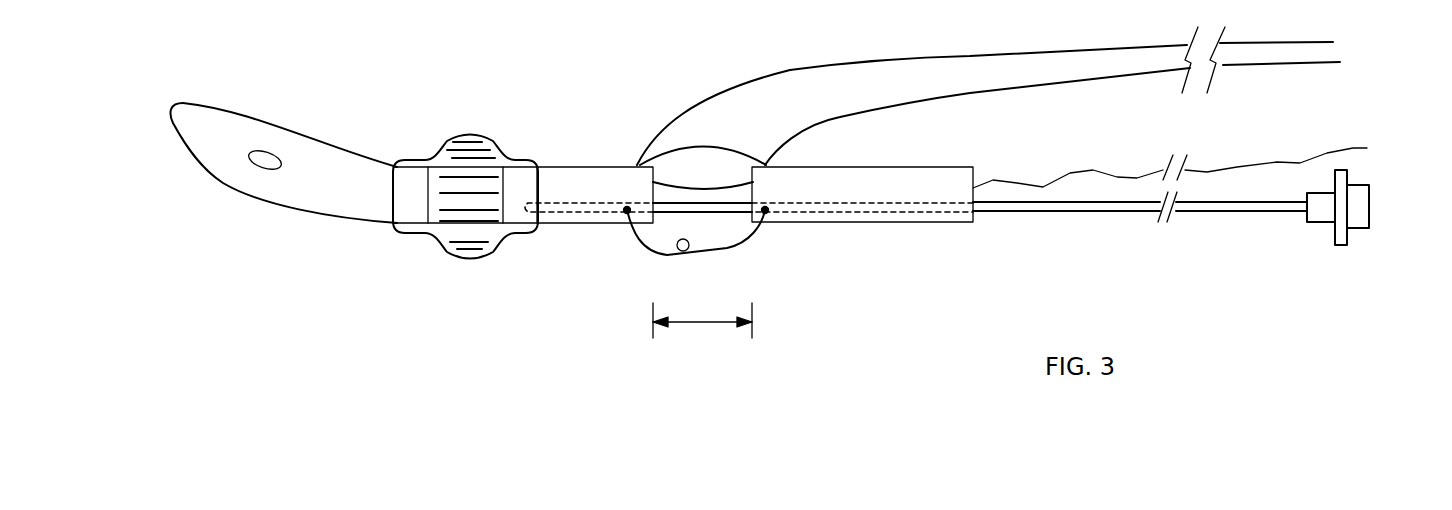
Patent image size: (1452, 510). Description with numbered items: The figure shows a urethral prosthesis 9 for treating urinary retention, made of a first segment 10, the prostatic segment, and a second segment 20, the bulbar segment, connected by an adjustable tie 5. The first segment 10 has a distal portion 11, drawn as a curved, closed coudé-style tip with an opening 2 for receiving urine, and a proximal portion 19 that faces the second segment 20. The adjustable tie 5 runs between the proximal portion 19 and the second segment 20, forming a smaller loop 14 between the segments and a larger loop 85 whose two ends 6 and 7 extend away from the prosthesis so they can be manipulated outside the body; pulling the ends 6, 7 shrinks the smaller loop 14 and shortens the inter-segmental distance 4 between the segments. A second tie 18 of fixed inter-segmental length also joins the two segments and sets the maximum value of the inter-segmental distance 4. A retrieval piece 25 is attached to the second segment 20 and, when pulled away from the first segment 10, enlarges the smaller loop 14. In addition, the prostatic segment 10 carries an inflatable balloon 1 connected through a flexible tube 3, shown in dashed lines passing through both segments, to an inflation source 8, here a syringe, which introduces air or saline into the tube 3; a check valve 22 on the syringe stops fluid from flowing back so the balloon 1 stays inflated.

The inflatable balloon 1 is at (448, 252).
The opening 2 is at (262, 158).
The tube 3 is at (600, 214).
The inter-segmental distance 4 is at (702, 329).
The adjustable tie 5 is at (695, 148).
The end of adjustable tie 6 is at (1333, 41).
The end of adjustable tie 7 is at (1330, 63).
The inflation source 8 is at (1344, 215).
The prosthesis 9 is at (557, 88).
The first segment 10 is at (335, 203).
The distal portion 11 is at (197, 142).
The smaller loop 14 is at (670, 182).
The second tie 18 is at (668, 256).
The proximal portion 19 is at (603, 178).
The second segment 20 is at (895, 196).
The check valve 22 is at (1333, 235).
The retrieval piece 25 is at (1368, 149).
The larger loop 85 is at (857, 66).